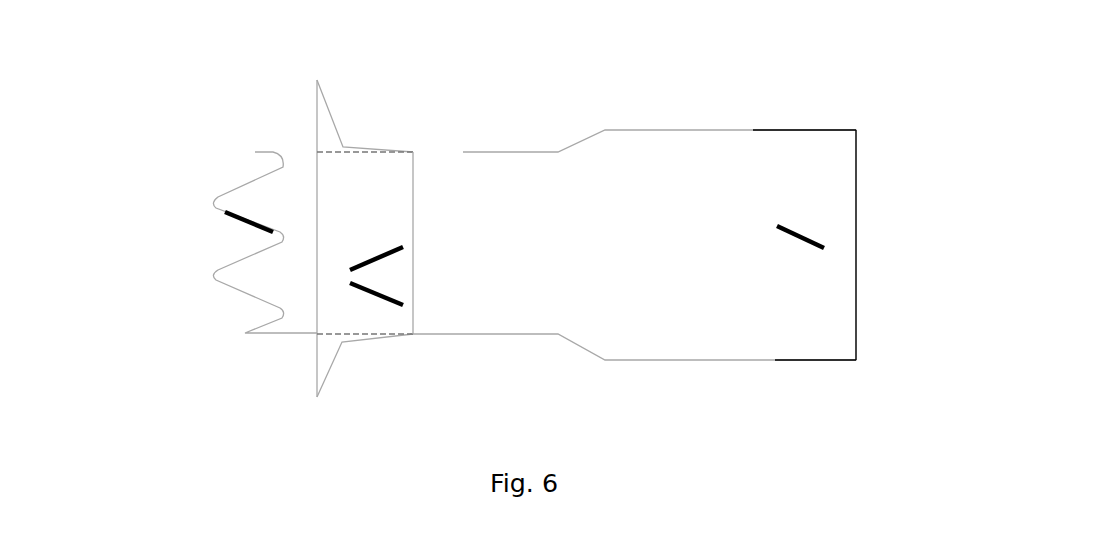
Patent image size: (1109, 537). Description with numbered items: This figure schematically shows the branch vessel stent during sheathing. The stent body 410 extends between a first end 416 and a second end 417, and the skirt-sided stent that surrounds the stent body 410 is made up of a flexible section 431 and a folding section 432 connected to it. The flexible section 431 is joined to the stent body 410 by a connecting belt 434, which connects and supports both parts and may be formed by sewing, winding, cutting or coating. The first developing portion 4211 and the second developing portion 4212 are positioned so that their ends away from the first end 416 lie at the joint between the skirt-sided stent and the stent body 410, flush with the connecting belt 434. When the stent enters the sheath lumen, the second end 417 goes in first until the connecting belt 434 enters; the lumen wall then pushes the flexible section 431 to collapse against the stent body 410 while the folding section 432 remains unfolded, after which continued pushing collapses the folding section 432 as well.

The stent body 410 is at (640, 330).
The first end 416 is at (207, 245).
The second end 417 is at (868, 270).
The flexible section 431 is at (362, 150).
The folding section 432 is at (326, 103).
The connecting belt 434 is at (413, 188).
The first developing portion 4211 is at (393, 255).
The second developing portion 4212 is at (388, 300).